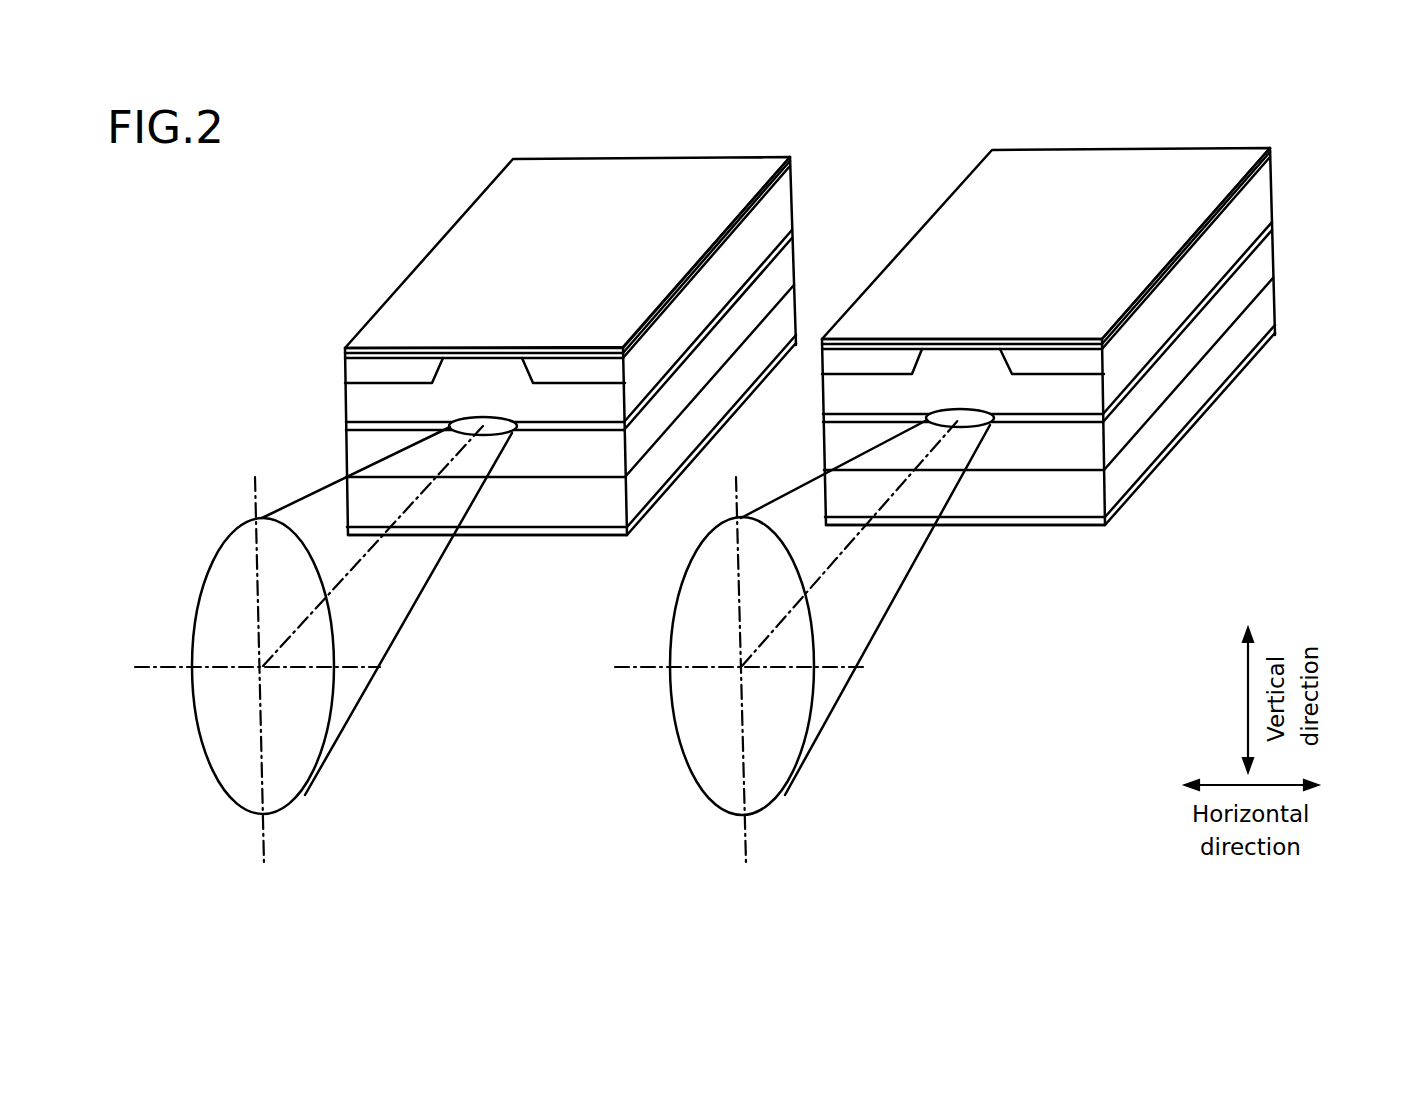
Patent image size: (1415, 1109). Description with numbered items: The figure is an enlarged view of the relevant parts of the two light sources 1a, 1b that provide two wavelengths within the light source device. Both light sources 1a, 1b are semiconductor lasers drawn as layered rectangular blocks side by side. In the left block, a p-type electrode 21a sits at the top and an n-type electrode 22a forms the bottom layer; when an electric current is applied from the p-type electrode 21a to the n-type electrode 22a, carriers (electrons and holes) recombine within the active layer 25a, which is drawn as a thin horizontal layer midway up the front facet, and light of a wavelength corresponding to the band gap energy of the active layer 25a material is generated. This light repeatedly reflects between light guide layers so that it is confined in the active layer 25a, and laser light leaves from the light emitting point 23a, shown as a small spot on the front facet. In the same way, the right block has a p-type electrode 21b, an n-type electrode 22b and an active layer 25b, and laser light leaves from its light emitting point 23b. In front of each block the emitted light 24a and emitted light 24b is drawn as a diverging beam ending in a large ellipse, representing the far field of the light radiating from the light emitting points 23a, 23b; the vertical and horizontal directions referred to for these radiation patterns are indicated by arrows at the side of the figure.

The light source 1a is at (616, 395).
The light source 1b is at (1112, 366).
The p-type electrode 21a is at (793, 172).
The p-type electrode 21b is at (1273, 164).
The n-type electrode 22a is at (565, 531).
The n-type electrode 22b is at (1163, 453).
The light emitting point 23a is at (484, 425).
The light emitting point 23b is at (960, 417).
The emitted light 24a is at (306, 799).
The emitted light 24b is at (785, 799).
The active layer 25a is at (540, 425).
The active layer 25b is at (1027, 418).